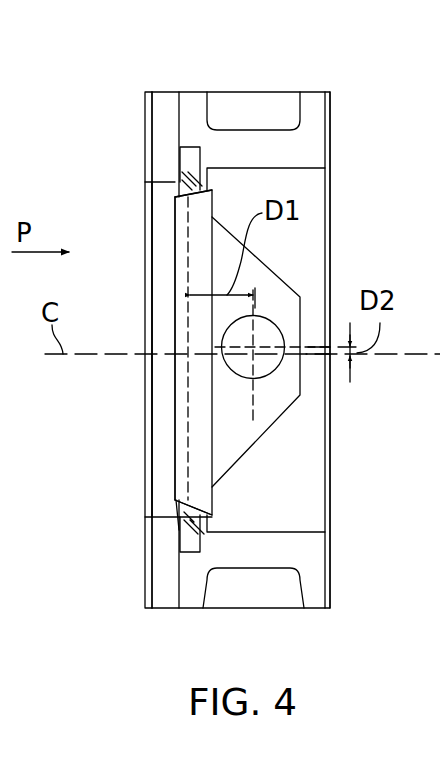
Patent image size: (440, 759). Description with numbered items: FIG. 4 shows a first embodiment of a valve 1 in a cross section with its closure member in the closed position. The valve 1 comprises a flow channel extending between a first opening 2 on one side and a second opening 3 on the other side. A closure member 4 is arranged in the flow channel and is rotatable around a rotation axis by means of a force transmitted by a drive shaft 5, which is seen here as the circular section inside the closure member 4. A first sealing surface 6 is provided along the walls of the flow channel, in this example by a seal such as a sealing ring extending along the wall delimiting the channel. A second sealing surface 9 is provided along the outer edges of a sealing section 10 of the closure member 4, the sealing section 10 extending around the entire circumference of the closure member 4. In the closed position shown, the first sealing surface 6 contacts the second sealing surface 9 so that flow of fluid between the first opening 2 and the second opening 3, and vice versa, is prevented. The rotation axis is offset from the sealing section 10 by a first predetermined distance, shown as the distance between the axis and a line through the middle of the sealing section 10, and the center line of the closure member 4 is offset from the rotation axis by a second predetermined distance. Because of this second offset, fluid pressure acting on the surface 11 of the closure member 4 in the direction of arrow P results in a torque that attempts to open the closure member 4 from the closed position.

The valve 1 is at (211, 64).
The first opening 2 is at (148, 231).
The second opening 3 is at (320, 237).
The closure member 4 is at (178, 391).
The drive shaft 5 is at (268, 366).
The first sealing surface 6 is at (175, 508).
The second sealing surface 9 is at (178, 500).
The sealing section 10 is at (174, 197).
The surface 11 is at (152, 281).